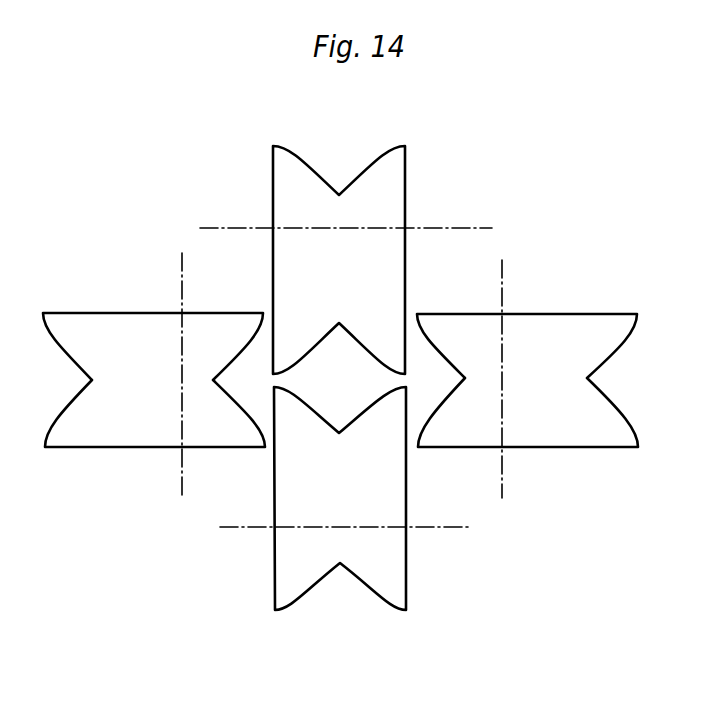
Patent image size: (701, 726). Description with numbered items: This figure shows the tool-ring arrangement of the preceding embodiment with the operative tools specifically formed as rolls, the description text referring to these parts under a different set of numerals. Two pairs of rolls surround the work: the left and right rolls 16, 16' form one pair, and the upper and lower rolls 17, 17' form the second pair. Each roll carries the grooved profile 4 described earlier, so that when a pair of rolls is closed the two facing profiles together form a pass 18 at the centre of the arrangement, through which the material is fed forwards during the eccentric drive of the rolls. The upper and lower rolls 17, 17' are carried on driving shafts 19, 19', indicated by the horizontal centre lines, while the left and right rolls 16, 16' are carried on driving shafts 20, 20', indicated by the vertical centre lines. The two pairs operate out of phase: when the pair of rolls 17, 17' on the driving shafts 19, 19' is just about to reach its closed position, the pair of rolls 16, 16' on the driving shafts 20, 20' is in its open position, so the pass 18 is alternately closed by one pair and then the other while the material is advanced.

The profile 4 is at (252, 390).
The roll 16 is at (154, 355).
The roll 16' is at (531, 355).
The roll 17 is at (366, 258).
The roll 17' is at (375, 498).
The pass 18 is at (332, 390).
The driving shaft 19 is at (363, 200).
The driving shaft 19' is at (339, 561).
The driving shaft 20 is at (151, 374).
The driving shaft 20' is at (538, 375).